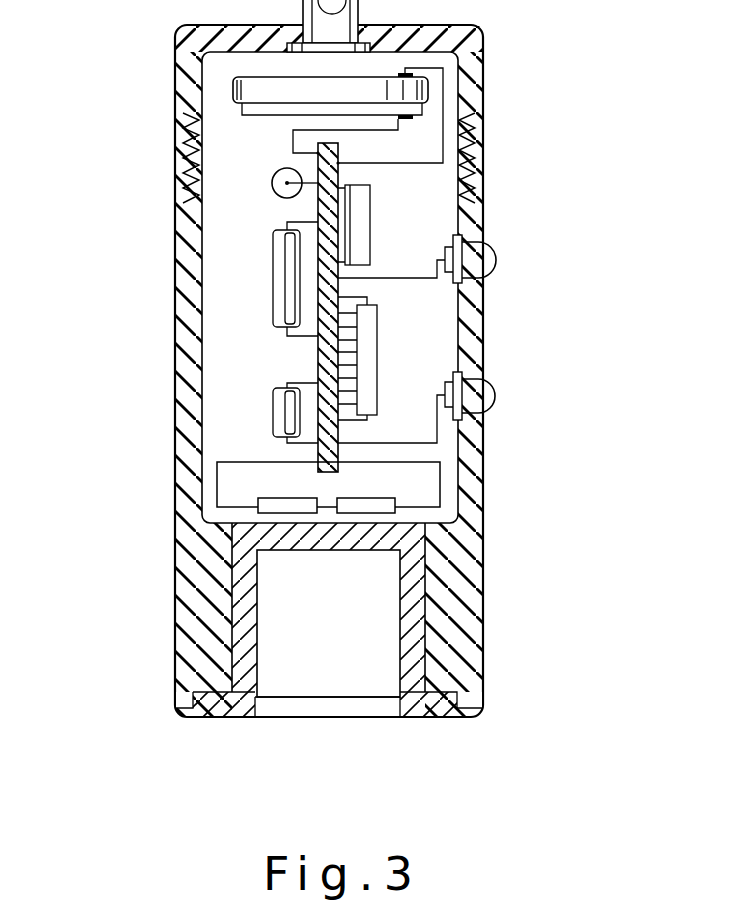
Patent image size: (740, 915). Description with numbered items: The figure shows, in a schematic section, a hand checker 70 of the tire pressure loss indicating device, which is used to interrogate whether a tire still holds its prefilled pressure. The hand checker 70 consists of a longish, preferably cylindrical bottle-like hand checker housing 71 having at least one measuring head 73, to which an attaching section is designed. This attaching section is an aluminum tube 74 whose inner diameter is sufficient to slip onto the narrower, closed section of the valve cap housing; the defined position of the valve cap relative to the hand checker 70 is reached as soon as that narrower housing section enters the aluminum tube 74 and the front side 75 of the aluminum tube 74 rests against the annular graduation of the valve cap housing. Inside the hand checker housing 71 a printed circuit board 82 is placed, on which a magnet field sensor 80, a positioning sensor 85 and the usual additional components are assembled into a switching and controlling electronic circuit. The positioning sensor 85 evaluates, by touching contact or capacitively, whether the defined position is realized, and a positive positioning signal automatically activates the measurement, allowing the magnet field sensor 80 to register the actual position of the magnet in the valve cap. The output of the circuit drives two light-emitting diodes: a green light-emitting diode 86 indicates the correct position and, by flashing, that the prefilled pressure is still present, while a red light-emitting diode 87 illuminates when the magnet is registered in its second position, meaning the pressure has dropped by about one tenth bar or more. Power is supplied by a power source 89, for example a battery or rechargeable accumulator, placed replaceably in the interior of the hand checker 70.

The hand checker 70 is at (307, 404).
The hand checker housing 71 is at (190, 372).
The measuring head 73 is at (335, 732).
The aluminum tube 74 is at (255, 677).
The front side 75 is at (213, 718).
The magnet field sensor 80 is at (263, 498).
The printed circuit board 82 is at (323, 361).
The positioning sensor 85 is at (380, 498).
The light-emitting diode 86 is at (488, 258).
The light-emitting diode 87 is at (485, 393).
The power source 89 is at (233, 83).